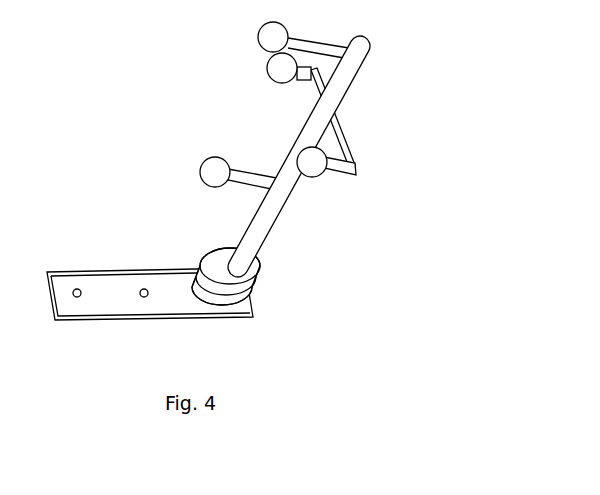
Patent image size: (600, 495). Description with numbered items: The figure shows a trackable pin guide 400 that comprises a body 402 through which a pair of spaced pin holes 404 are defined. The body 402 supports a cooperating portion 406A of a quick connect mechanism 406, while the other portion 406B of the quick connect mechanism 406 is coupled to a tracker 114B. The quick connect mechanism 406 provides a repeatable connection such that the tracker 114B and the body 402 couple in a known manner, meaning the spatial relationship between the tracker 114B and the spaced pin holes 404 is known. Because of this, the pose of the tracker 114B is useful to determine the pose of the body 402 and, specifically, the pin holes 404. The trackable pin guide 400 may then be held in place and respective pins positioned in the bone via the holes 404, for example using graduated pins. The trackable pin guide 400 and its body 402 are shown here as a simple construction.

The trackable pin guide 400 is at (98, 96).
The body 402 is at (128, 311).
The spaced pin holes 404 is at (134, 271).
The quick connect mechanism 406 is at (251, 281).
The cooperating portion of quick connect mechanism 406A is at (252, 305).
The other portion of quick connect mechanism 406B is at (262, 277).
The tracker 114B is at (341, 109).